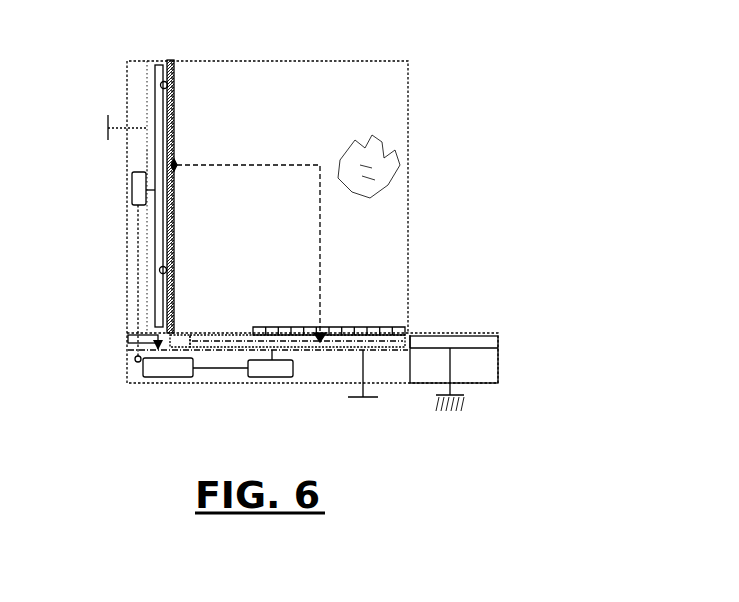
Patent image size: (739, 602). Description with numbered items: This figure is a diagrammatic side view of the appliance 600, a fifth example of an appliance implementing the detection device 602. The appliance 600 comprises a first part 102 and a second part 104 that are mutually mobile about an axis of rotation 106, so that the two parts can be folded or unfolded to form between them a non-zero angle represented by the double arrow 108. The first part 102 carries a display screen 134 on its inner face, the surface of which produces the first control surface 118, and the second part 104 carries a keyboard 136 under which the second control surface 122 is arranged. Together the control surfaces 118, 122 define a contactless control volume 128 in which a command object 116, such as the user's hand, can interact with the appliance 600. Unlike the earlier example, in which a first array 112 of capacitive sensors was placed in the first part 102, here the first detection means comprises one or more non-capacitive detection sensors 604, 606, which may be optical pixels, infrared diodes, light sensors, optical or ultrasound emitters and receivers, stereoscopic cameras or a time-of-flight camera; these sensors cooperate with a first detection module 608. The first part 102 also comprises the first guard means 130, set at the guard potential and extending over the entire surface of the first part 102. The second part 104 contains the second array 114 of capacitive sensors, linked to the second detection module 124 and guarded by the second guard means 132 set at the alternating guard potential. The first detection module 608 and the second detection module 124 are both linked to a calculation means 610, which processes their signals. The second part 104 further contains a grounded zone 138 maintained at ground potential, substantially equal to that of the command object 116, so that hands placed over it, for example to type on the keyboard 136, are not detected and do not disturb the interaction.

The appliance 600 is at (541, 112).
The first part 102 is at (121, 52).
The second part 104 is at (501, 385).
The axis of rotation 106 is at (134, 359).
The double arrow 108 is at (184, 309).
The first array of capacitive sensors 112 is at (148, 163).
The second array of capacitive sensors 114 is at (313, 351).
The command object 116 is at (324, 144).
The control surface 118 is at (176, 88).
The second control surface 122 is at (382, 327).
The second detection module 124 is at (268, 378).
The contactless control volume 128 is at (409, 100).
The first guard means 130 is at (146, 97).
The second guard means 132 is at (387, 351).
The display screen 134 is at (174, 105).
The keyboard 136 is at (338, 326).
The grounded zone 138 is at (460, 337).
The detection device 602 is at (126, 384).
The non-capacitive detection sensor 604 is at (160, 82).
The non-capacitive detection sensor 606 is at (160, 275).
The first detection module 608 is at (132, 192).
The calculation means 610 is at (175, 378).